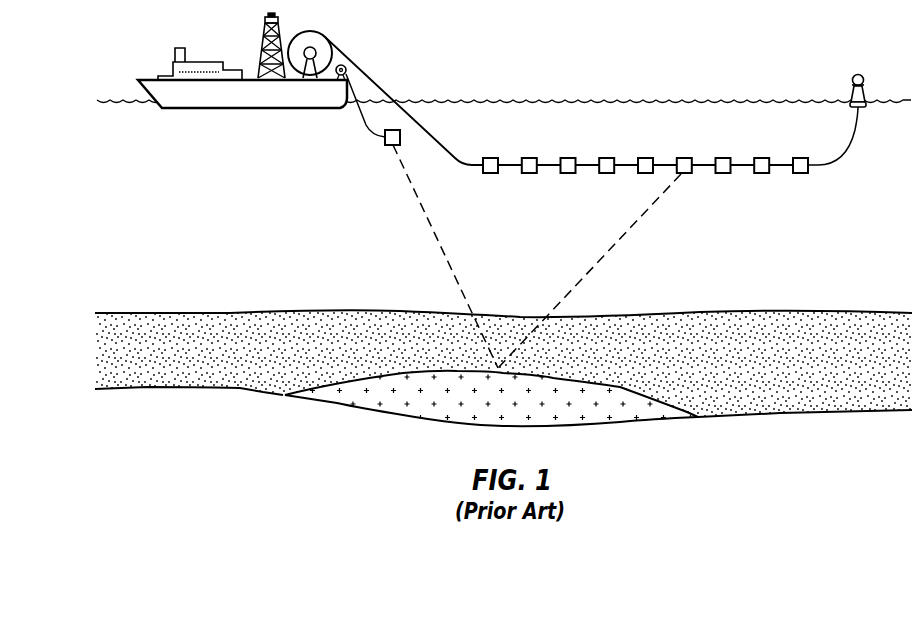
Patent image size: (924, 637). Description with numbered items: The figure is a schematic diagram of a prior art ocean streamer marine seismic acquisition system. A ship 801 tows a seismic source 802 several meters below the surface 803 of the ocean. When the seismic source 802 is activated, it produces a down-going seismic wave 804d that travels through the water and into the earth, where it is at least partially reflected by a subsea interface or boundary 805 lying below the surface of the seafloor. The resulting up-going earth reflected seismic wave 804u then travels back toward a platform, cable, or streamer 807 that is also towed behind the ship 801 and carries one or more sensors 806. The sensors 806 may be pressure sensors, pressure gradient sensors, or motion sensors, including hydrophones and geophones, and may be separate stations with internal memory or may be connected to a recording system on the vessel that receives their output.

The ship 801 is at (150, 79).
The seismic source 802 is at (385, 144).
The surface 803 is at (589, 100).
The down-going seismic wave 804d is at (437, 240).
The up-going earth reflected seismic wave 804u is at (623, 238).
The subsea interface or boundary 805 is at (410, 372).
The sensors 806 is at (800, 174).
The streamer 807 is at (434, 141).